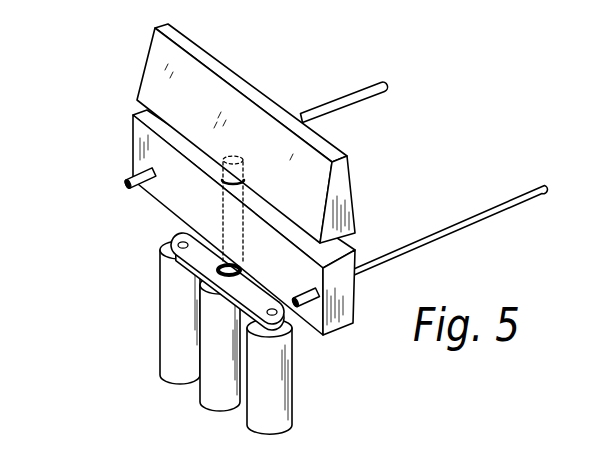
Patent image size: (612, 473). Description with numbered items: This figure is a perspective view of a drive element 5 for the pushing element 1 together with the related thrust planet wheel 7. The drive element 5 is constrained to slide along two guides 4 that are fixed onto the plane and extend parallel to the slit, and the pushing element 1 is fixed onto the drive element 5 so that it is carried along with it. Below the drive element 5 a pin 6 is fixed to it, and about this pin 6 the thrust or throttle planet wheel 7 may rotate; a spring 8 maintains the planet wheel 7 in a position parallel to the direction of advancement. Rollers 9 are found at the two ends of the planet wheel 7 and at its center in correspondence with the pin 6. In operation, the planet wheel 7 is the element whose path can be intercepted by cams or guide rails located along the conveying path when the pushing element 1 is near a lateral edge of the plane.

The pushing element 1 is at (220, 70).
The guides 4 is at (146, 182).
The drive element 5 is at (167, 187).
The pin 6 is at (210, 175).
The thrust or throttle planet wheel 7 is at (290, 323).
The spring 8 is at (212, 287).
The rollers 9 is at (223, 367).